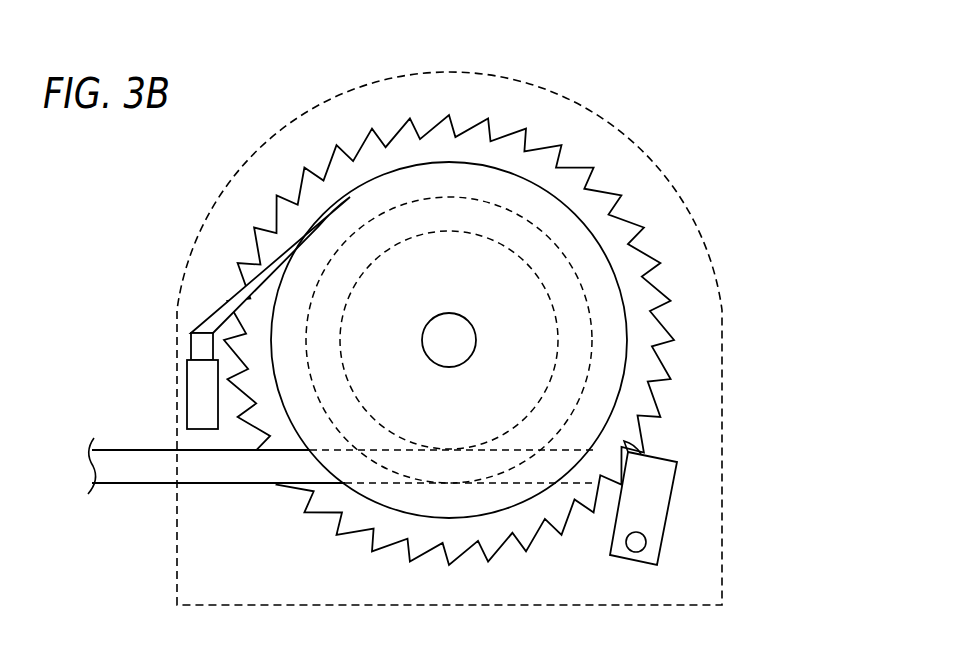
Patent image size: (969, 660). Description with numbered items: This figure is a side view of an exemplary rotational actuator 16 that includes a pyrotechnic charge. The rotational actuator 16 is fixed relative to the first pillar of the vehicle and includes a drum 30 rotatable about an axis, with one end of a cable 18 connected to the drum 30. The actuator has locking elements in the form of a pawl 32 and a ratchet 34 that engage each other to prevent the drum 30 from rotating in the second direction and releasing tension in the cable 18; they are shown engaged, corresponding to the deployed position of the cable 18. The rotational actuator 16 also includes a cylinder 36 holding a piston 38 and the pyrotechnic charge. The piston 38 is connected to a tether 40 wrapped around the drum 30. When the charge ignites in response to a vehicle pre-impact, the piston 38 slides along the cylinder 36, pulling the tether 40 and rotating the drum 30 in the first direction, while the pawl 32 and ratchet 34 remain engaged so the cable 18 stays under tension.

The rotational actuator 16 is at (546, 84).
The cable 18 is at (133, 484).
The drum 30 is at (545, 198).
The pawl 32 is at (675, 488).
The ratchet 34 is at (630, 220).
The cylinder 36 is at (190, 387).
The piston 38 is at (192, 345).
The tether 40 is at (212, 313).